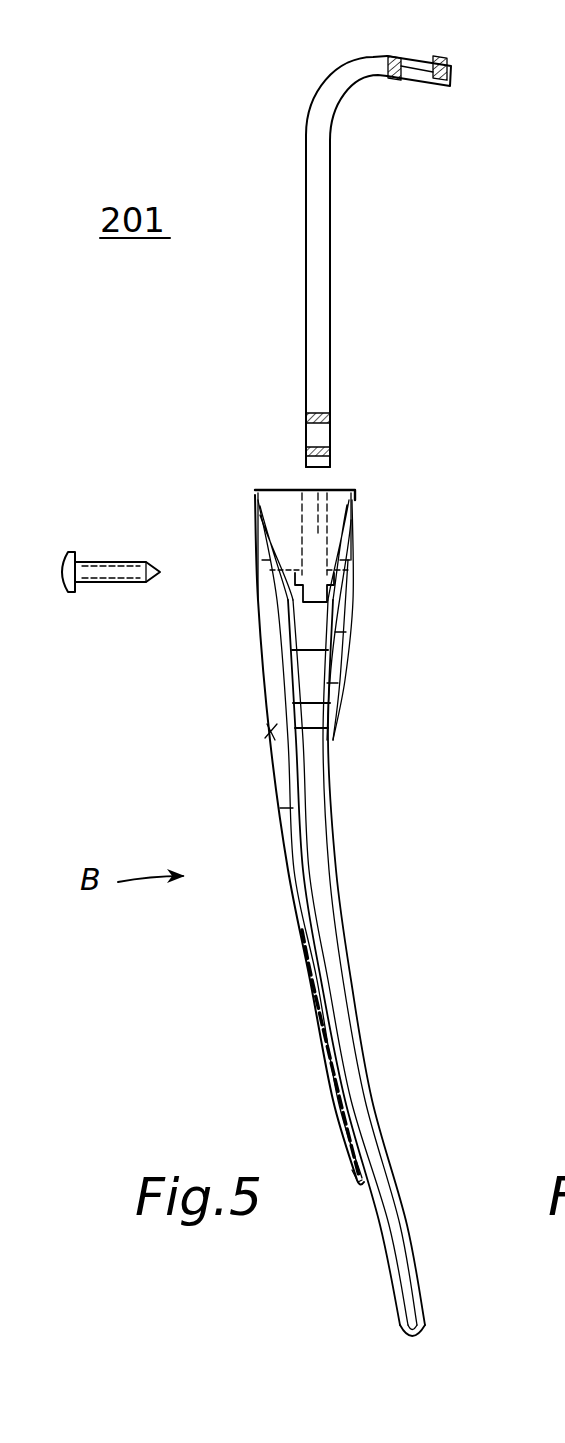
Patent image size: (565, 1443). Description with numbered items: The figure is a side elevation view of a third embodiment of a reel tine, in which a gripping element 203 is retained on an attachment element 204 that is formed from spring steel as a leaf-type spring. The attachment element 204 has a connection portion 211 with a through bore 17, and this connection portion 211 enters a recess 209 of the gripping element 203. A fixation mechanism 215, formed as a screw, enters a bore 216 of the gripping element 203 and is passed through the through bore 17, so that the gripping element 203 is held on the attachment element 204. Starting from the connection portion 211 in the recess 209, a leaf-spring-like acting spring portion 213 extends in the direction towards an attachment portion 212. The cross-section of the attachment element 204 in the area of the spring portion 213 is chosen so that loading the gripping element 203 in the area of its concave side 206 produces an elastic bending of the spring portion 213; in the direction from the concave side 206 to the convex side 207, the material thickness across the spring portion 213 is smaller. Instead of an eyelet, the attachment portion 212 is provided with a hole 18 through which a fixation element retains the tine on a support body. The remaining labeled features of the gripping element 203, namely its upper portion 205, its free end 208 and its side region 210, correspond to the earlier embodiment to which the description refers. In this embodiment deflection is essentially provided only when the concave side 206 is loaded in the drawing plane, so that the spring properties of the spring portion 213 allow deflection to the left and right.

The gripping element 203 is at (550, 725).
The attachment element 204 is at (526, 212).
The housing 205 is at (279, 501).
The concave side 206 is at (340, 864).
The convex side 207 is at (357, 1190).
The arm tip 208 is at (405, 1338).
The recess 209 is at (322, 494).
The strip 210 is at (272, 730).
The connection portion 211 is at (322, 412).
The attachment portion 212 is at (388, 58).
The spring portion 213 is at (328, 296).
The fixation mechanism 215 is at (104, 585).
The bore 216 is at (358, 555).
The through bore 17 is at (320, 440).
The hole 18 is at (418, 80).